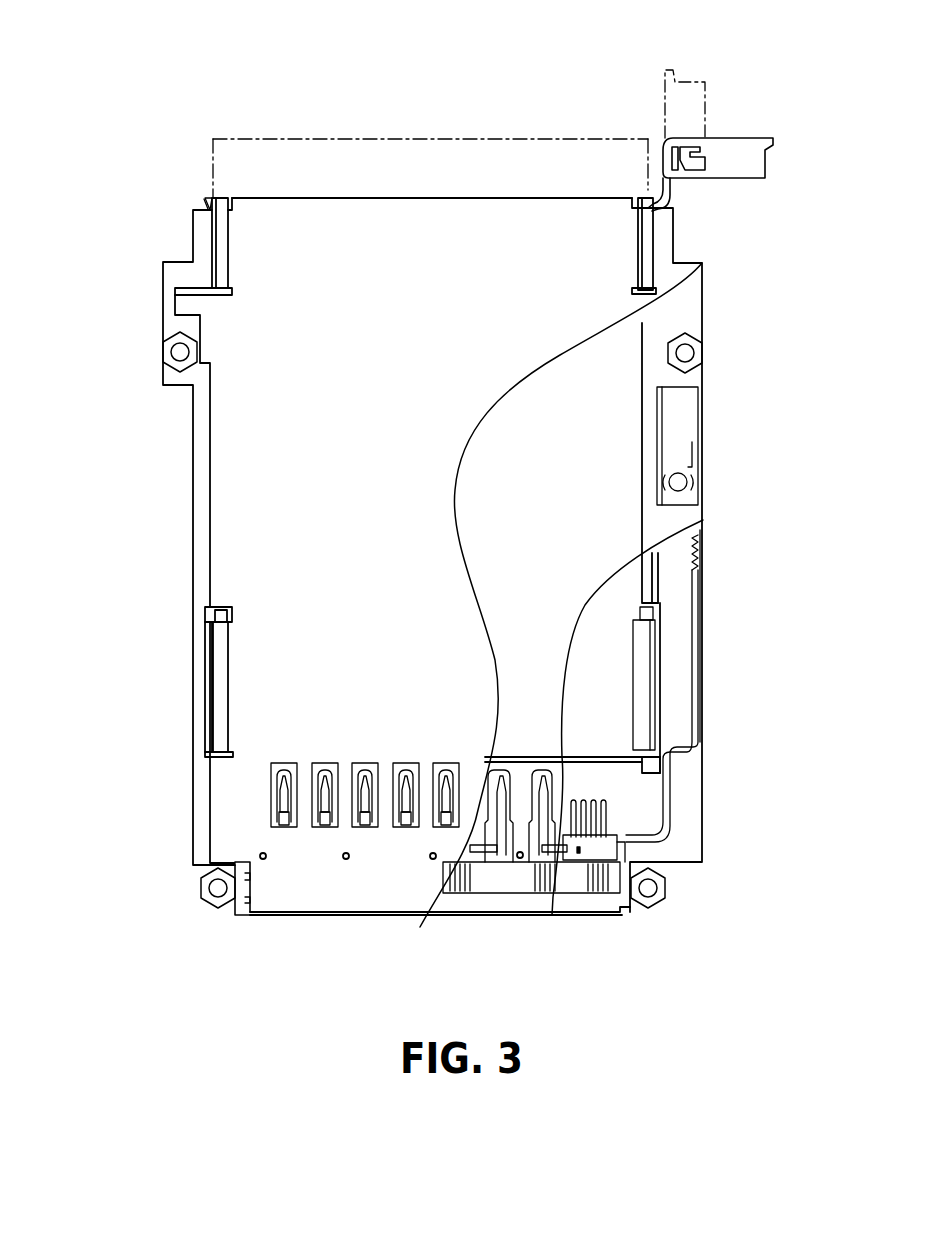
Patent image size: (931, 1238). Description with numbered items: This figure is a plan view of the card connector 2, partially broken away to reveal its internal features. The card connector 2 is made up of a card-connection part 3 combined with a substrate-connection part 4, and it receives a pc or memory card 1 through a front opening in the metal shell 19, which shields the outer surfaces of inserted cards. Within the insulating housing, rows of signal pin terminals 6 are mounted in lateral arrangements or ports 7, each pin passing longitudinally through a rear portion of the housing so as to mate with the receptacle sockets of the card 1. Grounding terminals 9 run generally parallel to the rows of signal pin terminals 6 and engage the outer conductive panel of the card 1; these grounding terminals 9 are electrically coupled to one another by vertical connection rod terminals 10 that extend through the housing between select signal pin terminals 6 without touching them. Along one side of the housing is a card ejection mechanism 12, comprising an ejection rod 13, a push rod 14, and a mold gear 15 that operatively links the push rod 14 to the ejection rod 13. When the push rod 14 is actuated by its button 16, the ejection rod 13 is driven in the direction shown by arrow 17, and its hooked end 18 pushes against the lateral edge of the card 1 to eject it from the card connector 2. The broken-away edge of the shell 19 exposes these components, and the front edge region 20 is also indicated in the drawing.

The pc or memory card 1 is at (493, 130).
The card connector 2 is at (153, 217).
The card-connection part 3 is at (221, 533).
The substrate-connection part 4 is at (604, 902).
The signal pin terminals 6 is at (603, 797).
The ports 7 is at (624, 807).
The grounding terminals 9 is at (329, 766).
The connection rod terminals 10 is at (447, 893).
The card ejection mechanism 12 is at (710, 549).
The ejection rod 13 is at (693, 657).
The push rod 14 is at (660, 403).
The mold gear 15 is at (689, 466).
The button 16 is at (730, 138).
The arrow 17 is at (757, 677).
The hooked end 18 is at (672, 815).
The metal shell 19 is at (378, 332).
The front edge 20 is at (330, 197).